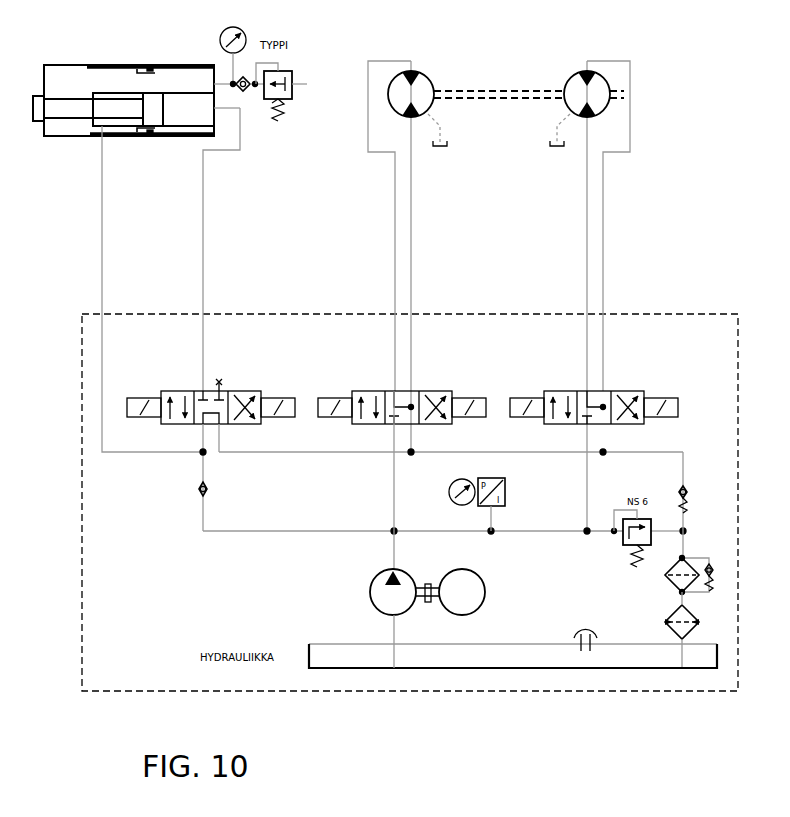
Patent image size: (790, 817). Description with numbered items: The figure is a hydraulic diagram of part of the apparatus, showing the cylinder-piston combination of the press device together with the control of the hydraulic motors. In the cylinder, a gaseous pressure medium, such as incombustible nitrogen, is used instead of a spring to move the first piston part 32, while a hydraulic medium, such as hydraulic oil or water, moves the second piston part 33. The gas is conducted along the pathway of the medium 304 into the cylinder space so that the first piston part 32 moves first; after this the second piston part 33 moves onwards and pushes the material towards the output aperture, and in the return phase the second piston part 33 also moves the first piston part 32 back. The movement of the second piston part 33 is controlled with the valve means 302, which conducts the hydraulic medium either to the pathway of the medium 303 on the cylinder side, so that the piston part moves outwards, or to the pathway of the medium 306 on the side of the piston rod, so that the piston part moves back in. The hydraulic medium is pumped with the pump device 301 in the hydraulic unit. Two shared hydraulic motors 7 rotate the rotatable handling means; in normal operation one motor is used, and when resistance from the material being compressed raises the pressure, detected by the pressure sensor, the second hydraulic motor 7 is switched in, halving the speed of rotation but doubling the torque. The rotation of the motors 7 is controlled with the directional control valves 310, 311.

The first piston part 32 is at (82, 64).
The second piston part 33 is at (48, 118).
The pathway of the medium 304 is at (300, 83).
The hydraulic motor 7 is at (432, 75).
The pathway of the medium 306 is at (103, 233).
The pathway of the medium 303 is at (203, 197).
The valve means 302 is at (237, 390).
The directional control valve 311 is at (430, 392).
The directional control valve 310 is at (627, 392).
The pump device 301 is at (385, 617).